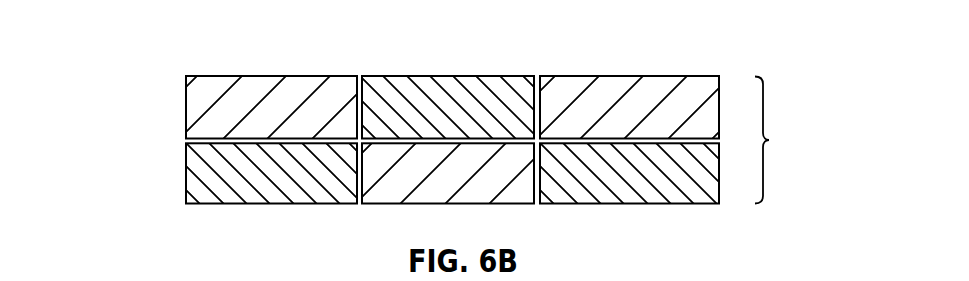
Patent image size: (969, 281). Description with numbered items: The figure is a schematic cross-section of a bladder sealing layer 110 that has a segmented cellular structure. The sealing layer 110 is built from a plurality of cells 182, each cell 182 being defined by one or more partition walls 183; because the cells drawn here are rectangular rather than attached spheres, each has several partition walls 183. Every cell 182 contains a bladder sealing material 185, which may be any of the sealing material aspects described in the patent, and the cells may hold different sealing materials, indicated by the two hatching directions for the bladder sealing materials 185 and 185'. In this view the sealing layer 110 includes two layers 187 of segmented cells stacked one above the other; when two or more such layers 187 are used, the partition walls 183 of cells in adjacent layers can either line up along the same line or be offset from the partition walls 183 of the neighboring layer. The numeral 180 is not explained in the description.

The bladder sealing layer 110 is at (768, 140).
The lower right ply 180 is at (672, 202).
The cell 182 is at (655, 85).
The partition wall 183 is at (362, 78).
The bladder sealing material 185 is at (258, 118).
The bladder sealing material 185' is at (221, 188).
The layers of segmented cells 187 is at (186, 99).